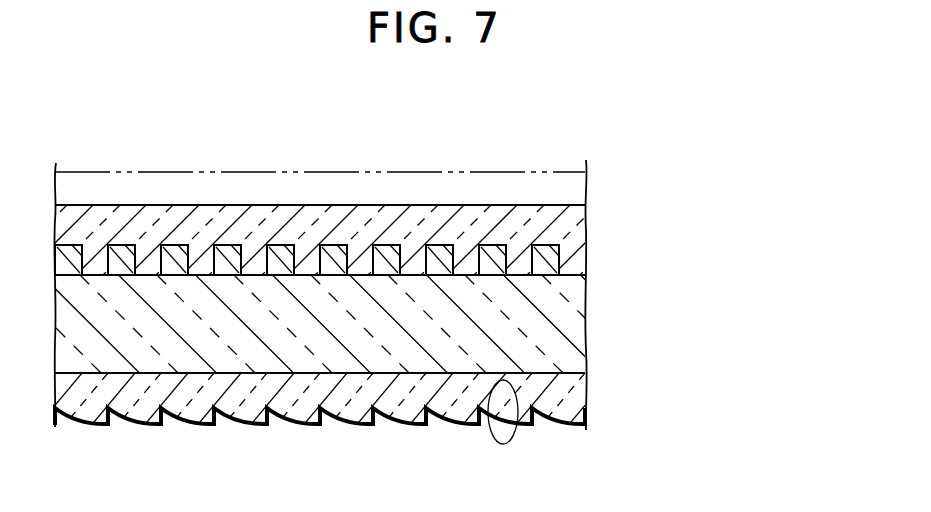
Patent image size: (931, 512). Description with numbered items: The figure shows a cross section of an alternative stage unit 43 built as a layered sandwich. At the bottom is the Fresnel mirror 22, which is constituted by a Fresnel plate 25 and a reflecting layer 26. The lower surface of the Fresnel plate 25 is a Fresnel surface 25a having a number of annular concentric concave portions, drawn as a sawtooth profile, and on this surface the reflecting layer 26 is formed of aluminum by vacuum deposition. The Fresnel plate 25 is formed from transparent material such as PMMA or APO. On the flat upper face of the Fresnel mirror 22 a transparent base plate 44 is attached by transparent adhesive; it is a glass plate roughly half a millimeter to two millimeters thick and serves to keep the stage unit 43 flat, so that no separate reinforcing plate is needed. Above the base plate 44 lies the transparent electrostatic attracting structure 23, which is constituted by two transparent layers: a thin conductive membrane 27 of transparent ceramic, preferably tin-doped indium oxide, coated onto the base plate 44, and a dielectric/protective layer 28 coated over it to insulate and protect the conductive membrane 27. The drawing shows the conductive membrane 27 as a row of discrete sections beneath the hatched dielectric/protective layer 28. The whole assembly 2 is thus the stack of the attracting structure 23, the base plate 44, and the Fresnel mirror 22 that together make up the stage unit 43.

The photovoltaic element 2 is at (474, 172).
The dielectric/protective layer 28 is at (582, 224).
The conductive membrane 27 is at (581, 259).
The electrostatic attracting structure 23 is at (718, 200).
The transparent base plate 44 is at (566, 312).
The Fresnel plate 25 is at (575, 387).
The Fresnel surface 25a is at (512, 378).
The reflecting layer 26 is at (585, 427).
The Fresnel mirror 22 is at (718, 372).
The stage unit 43 is at (778, 225).